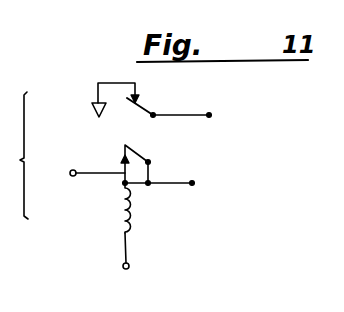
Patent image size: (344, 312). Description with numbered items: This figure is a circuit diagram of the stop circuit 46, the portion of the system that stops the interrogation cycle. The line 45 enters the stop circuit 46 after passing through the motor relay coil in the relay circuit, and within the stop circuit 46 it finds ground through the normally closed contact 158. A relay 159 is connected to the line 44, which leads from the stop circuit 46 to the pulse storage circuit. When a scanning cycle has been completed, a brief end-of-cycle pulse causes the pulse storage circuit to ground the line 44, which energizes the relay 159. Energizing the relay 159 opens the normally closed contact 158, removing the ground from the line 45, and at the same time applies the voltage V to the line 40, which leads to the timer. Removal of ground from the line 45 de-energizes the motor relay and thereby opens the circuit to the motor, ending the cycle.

The normally closed contact 158 is at (143, 111).
The line 45 is at (199, 114).
The line 40 is at (73, 170).
The stop circuit 46 is at (183, 162).
The relay 159 is at (133, 215).
The line 44 is at (126, 269).